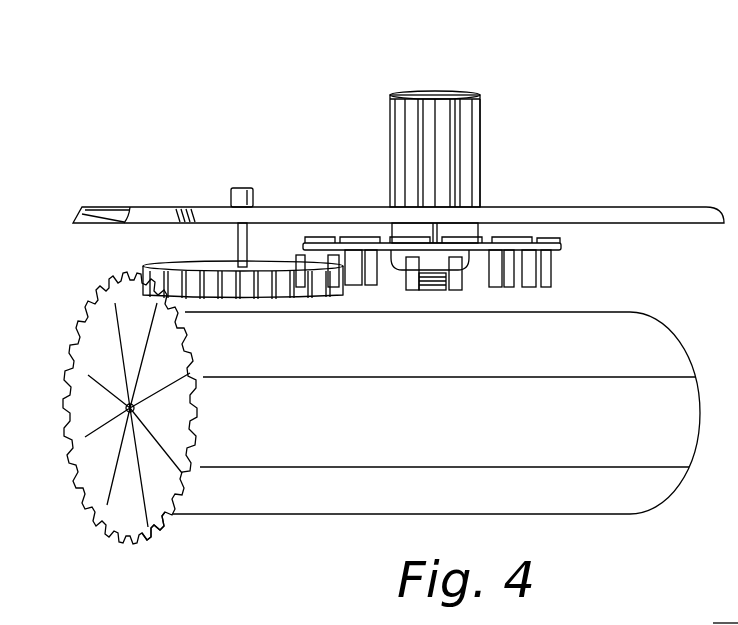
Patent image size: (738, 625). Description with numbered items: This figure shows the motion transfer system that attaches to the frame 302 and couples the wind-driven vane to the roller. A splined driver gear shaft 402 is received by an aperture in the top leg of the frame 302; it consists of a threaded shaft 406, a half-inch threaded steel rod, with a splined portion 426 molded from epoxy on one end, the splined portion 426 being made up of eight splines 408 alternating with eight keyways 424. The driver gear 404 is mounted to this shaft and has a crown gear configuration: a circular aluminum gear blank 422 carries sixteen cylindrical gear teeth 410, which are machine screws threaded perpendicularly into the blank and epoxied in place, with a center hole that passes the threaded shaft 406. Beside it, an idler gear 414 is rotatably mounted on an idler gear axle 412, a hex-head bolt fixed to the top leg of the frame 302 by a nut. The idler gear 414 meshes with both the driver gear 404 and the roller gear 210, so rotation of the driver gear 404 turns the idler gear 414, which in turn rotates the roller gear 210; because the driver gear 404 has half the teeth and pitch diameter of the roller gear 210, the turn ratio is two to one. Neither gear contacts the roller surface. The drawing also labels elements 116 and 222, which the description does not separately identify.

The magnetic drum 116 is at (686, 624).
The roller gear 210 is at (123, 538).
The sprocket teeth 222 is at (170, 530).
The frame 302 is at (614, 214).
The splined driver gear shaft 402 is at (435, 93).
The driver gear 404 is at (500, 247).
The threaded shaft 406 is at (432, 288).
The splines 408 is at (470, 125).
The gear teeth 410 is at (531, 268).
The idler gear axle 412 is at (240, 190).
The idler gear 414 is at (207, 278).
The gear blank 422 is at (331, 262).
The keyways 424 is at (402, 118).
The splined portion 426 is at (478, 150).